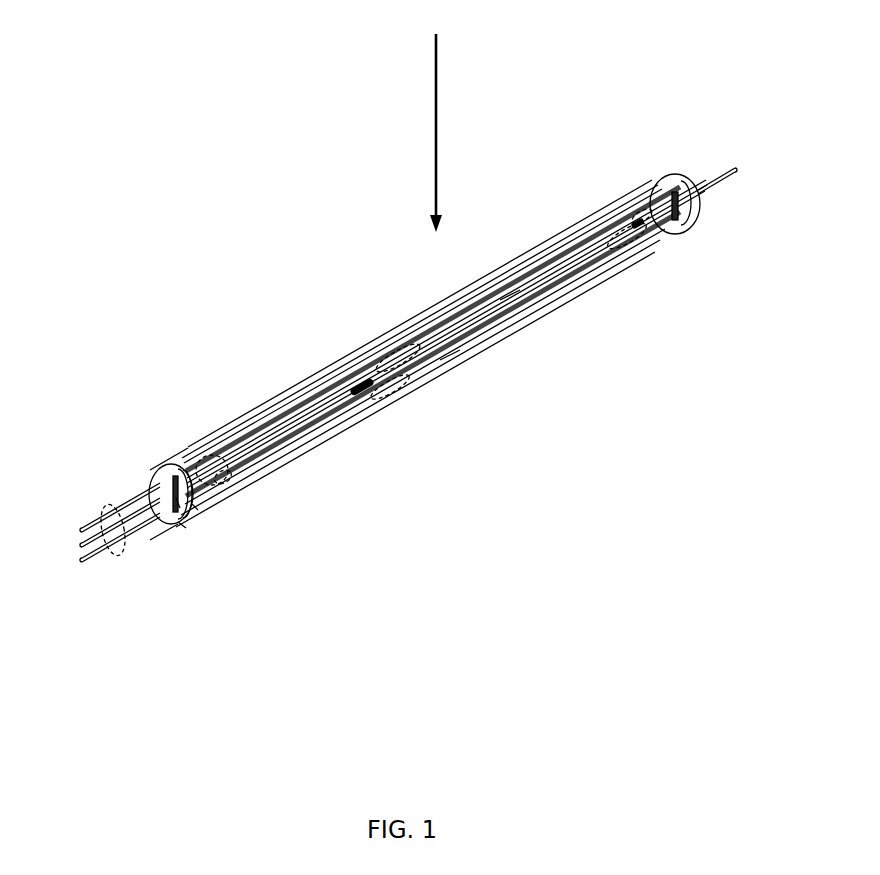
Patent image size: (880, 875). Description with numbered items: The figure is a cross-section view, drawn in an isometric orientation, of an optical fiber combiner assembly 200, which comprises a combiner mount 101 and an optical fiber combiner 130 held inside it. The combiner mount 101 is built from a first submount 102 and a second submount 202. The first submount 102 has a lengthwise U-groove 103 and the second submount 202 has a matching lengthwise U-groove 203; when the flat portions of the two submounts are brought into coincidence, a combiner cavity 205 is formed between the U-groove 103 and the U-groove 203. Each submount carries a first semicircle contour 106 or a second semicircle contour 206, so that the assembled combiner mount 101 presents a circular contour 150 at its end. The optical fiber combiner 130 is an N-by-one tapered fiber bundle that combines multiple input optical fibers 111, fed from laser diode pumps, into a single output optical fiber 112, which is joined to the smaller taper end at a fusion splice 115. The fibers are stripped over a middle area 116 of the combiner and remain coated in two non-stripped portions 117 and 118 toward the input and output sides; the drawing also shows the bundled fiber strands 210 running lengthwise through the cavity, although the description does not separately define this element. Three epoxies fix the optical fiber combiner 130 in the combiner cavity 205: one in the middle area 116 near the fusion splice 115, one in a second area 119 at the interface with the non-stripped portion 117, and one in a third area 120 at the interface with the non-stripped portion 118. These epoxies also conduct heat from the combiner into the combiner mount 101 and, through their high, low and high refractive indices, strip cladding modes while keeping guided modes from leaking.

The optical fiber combiner assembly 200 is at (433, 123).
The combiner mount 101 is at (181, 430).
The first submount 102 is at (293, 378).
The U-groove 103 is at (165, 468).
The first semicircle contour 106 is at (149, 474).
The input optical fibers 111 is at (103, 512).
The output optical fiber 112 is at (718, 196).
The fusion splice 115 is at (362, 386).
The middle area 116 is at (404, 354).
The non-stripped portion 117 is at (211, 455).
The non-stripped portion 118 is at (632, 231).
The second area 119 is at (230, 478).
The third area 120 is at (645, 216).
The optical fiber combiner 130 is at (497, 326).
The circular contour 150 is at (692, 232).
The second submount 202 is at (438, 396).
The U-groove 203 is at (194, 508).
The combiner cavity 205 is at (178, 504).
The second semicircle contour 206 is at (182, 526).
The fiber strands 210 is at (457, 308).